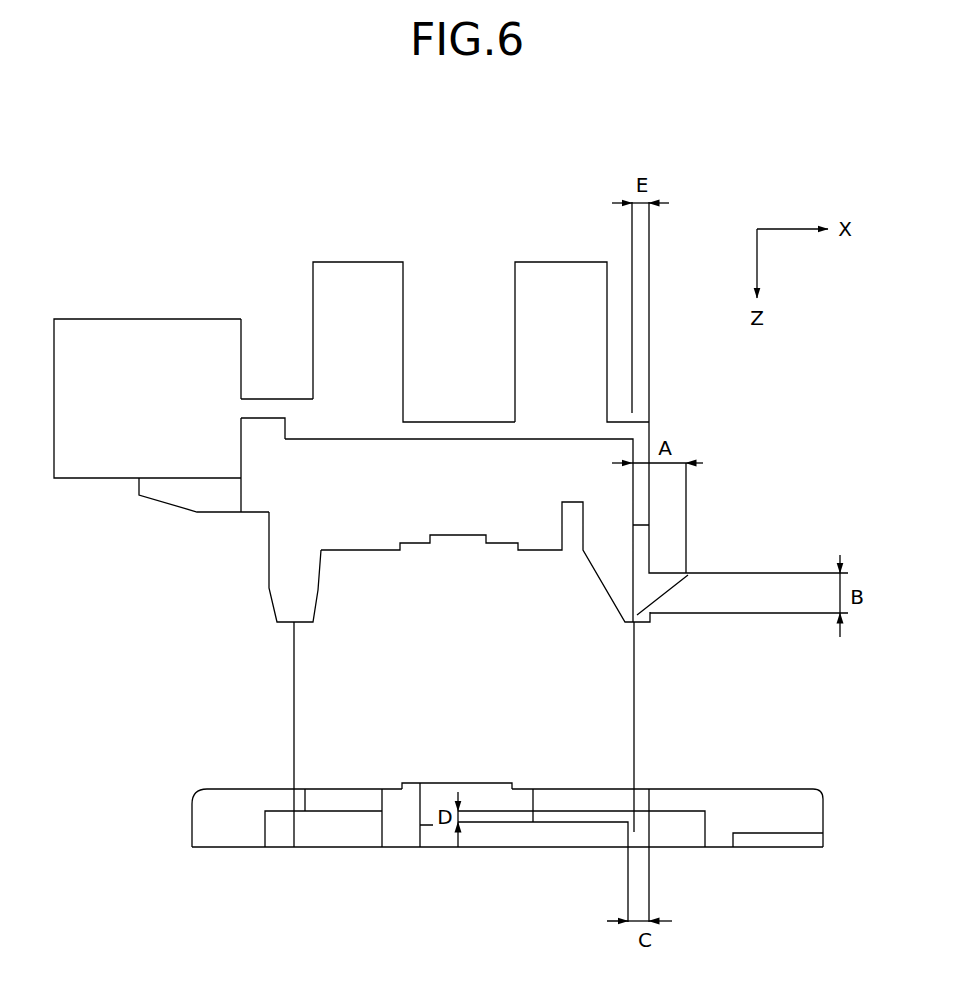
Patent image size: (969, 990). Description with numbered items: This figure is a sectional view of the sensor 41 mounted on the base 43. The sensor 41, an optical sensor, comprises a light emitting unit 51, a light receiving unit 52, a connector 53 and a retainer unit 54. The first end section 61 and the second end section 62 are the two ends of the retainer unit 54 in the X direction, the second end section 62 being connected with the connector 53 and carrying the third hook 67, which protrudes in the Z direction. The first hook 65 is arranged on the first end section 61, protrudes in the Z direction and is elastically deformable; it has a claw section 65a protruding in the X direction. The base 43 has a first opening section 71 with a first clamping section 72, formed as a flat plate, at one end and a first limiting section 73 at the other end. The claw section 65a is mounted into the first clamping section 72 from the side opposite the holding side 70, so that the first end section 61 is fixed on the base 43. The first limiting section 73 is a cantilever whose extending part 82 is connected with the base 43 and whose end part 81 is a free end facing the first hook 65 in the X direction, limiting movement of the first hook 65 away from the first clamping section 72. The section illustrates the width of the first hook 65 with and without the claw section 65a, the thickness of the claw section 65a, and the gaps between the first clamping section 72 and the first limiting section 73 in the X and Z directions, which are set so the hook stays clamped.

The sensor 41 is at (510, 236).
The base 43 is at (721, 851).
The light emitting unit 51 is at (558, 262).
The light receiving unit 52 is at (357, 262).
The connector 53 is at (147, 330).
The retainer unit 54 is at (656, 418).
The first end section 61 is at (620, 420).
The second end section 62 is at (266, 405).
The first hook 65 is at (665, 595).
The claw section 65a is at (665, 576).
The third hook 67 is at (270, 586).
The holding side 70 is at (437, 782).
The first opening section 71 is at (560, 798).
The first clamping section 72 is at (662, 800).
The first limiting section 73 is at (550, 849).
The end part 81 is at (618, 832).
The extending part 82 is at (498, 838).